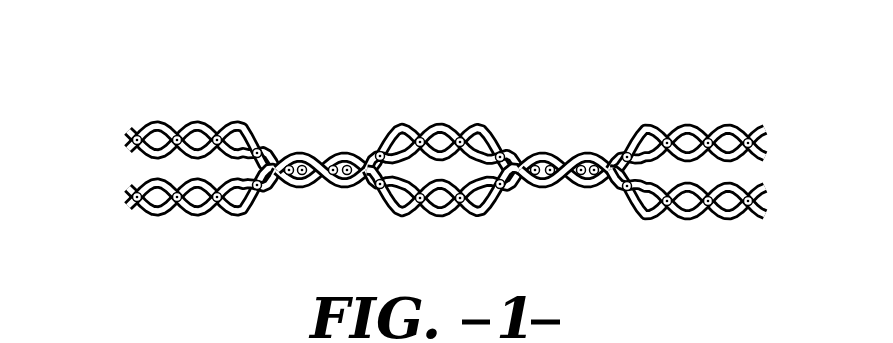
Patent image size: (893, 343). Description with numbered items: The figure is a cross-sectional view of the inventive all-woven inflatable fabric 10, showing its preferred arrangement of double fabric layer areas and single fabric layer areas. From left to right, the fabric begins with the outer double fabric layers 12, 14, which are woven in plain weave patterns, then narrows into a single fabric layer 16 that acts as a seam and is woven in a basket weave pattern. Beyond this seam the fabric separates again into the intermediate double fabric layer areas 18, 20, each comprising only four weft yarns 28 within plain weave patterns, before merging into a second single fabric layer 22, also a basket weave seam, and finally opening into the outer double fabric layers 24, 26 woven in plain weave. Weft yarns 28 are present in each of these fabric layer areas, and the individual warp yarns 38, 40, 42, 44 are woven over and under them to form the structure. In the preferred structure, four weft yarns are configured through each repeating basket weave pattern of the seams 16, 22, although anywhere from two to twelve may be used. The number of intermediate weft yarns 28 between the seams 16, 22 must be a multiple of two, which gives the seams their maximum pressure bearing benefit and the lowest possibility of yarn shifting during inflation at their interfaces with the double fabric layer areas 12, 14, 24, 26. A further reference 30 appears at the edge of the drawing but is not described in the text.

The inflatable fabric 10 is at (777, 141).
The double fabric layer 12 is at (278, 227).
The double fabric layer 14 is at (125, 114).
The single fabric layer 16 is at (360, 127).
The intermediate double fabric layer area 18 is at (523, 127).
The intermediate double fabric layer area 20 is at (522, 232).
The single fabric layer 22 is at (605, 125).
The double fabric layer 24 is at (762, 116).
The double fabric layer 26 is at (762, 232).
The weft yarns 28 is at (130, 139).
The rope portion 30 is at (792, 342).
The warp yarn 38 is at (130, 141).
The warp yarn 40 is at (128, 150).
The warp yarn 42 is at (128, 184).
The warp yarn 44 is at (126, 209).